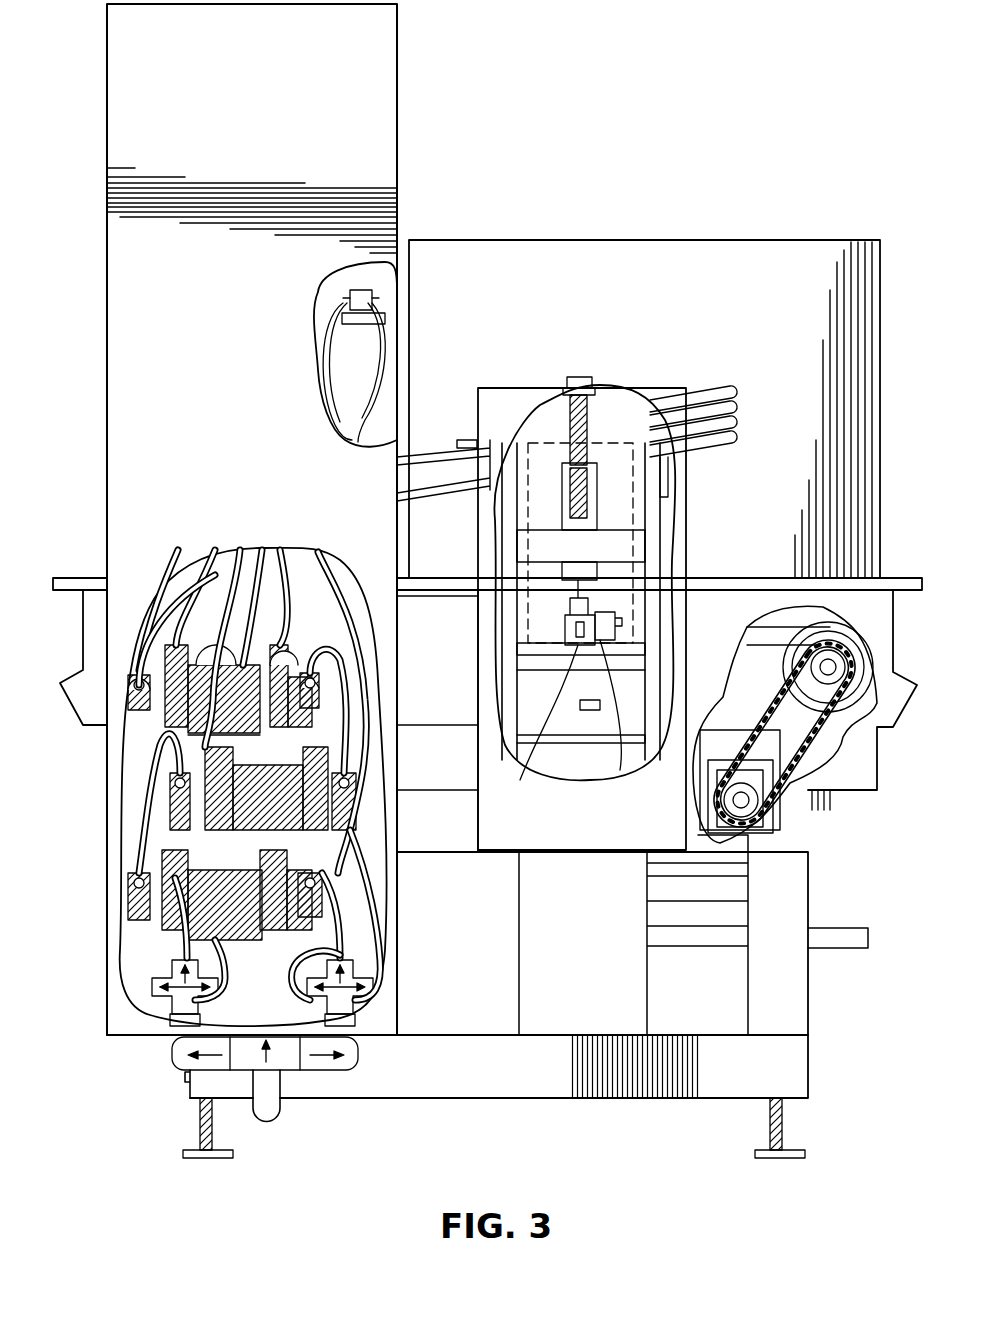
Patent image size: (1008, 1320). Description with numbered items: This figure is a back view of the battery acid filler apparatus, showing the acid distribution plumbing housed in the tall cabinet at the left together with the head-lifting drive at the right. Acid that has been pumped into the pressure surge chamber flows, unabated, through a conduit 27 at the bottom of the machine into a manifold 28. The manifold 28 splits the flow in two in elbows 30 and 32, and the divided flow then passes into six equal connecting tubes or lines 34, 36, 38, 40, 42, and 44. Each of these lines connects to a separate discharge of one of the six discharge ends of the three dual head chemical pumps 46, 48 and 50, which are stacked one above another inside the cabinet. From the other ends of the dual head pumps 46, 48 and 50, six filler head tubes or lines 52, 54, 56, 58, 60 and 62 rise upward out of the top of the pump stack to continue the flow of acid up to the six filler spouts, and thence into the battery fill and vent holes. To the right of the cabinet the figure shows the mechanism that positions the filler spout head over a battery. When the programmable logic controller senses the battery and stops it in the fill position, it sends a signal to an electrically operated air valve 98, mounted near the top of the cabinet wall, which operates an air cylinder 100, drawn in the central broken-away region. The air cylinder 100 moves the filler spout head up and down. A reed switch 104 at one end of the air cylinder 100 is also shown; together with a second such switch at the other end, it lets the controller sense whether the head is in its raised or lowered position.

The conduit 27 is at (268, 1120).
The manifold 28 is at (205, 1082).
The elbow 30 is at (175, 1052).
The elbow 32 is at (345, 1068).
The connecting tube 34 is at (168, 1000).
The connecting tube 36 is at (165, 972).
The connecting tube 38 is at (226, 987).
The connecting tube 40 is at (350, 1040).
The connecting tube 42 is at (370, 985).
The connecting tube 44 is at (385, 938).
The dual head chemical pump 46 is at (127, 922).
The dual head chemical pump 48 is at (165, 800).
The dual head chemical pump 50 is at (128, 728).
The filler head tube 52 is at (185, 556).
The filler head tube 54 is at (215, 556).
The filler head tube 56 is at (240, 556).
The filler head tube 58 is at (262, 556).
The filler head tube 60 is at (280, 558).
The filler head tube 62 is at (318, 575).
The electrically operated air valve 98 is at (385, 293).
The air cylinder 100 is at (612, 582).
The reed switch 104 is at (605, 620).